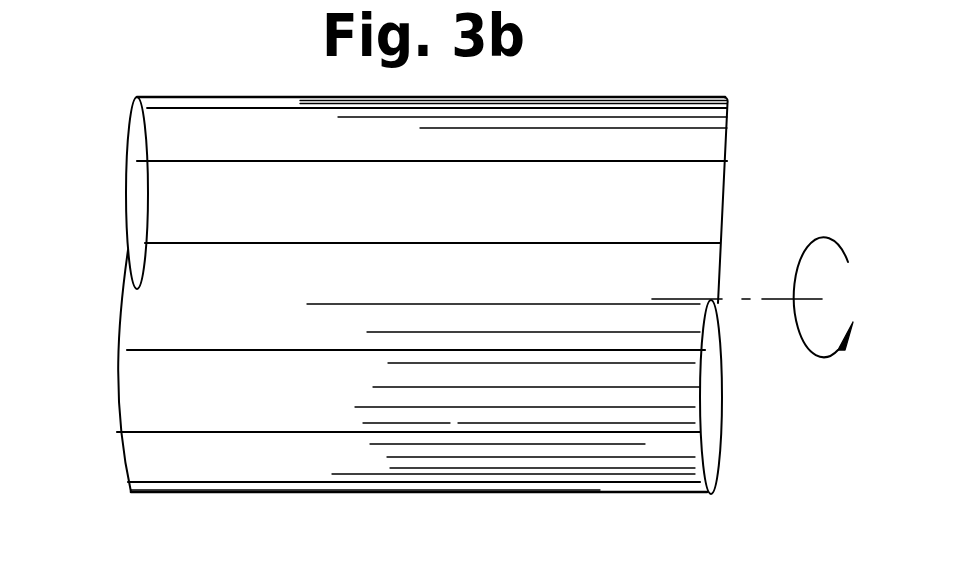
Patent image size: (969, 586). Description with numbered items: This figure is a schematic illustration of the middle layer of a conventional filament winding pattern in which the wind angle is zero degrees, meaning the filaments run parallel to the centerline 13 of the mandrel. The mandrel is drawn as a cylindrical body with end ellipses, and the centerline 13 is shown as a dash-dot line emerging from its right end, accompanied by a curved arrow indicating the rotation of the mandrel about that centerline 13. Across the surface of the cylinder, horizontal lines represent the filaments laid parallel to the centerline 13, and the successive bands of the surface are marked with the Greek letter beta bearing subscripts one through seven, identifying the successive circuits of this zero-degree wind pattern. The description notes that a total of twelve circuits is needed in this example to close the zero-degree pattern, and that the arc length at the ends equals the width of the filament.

The centerline 13 is at (762, 300).